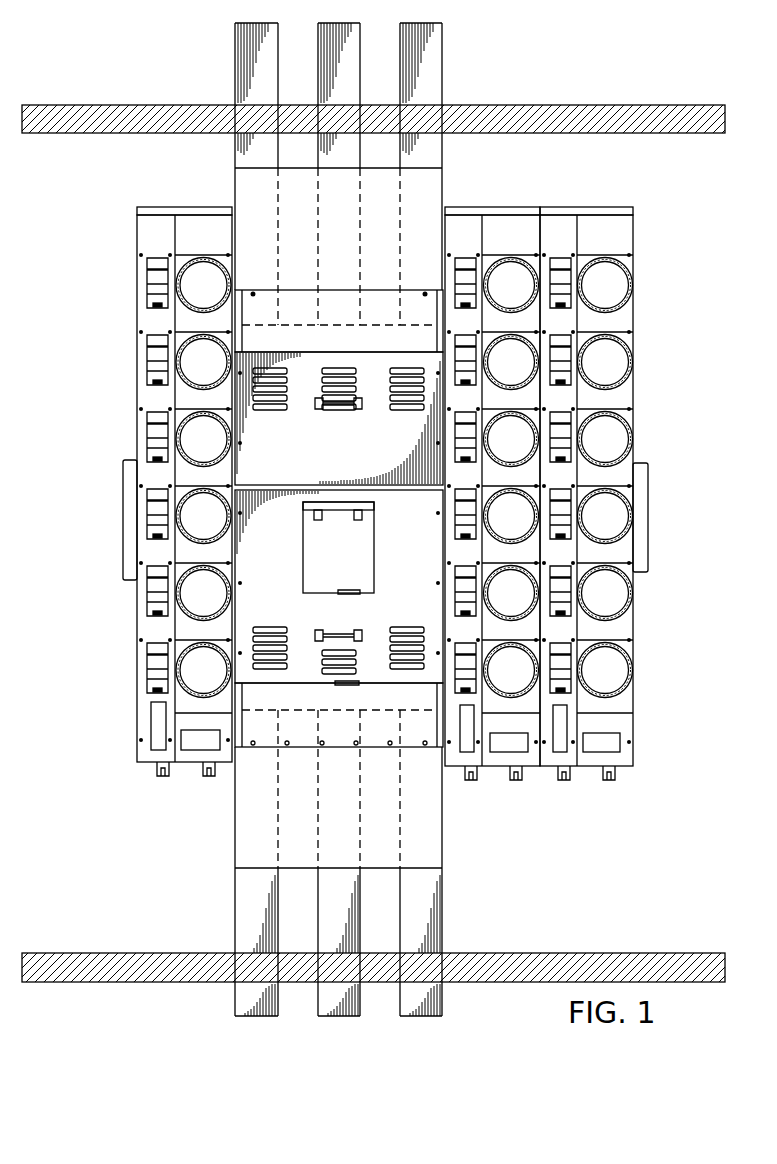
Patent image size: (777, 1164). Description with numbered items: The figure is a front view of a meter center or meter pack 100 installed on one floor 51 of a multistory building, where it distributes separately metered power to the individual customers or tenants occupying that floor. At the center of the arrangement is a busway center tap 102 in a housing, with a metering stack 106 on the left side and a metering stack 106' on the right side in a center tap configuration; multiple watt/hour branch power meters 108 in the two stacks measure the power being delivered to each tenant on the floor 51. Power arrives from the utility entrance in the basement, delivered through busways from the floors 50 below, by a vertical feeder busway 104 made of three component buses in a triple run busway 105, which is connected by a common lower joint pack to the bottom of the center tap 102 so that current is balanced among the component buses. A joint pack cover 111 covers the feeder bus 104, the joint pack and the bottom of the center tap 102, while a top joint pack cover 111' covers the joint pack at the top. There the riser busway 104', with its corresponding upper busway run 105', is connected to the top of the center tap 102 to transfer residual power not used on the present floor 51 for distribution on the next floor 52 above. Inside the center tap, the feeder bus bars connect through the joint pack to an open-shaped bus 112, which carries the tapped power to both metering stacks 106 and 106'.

The meter center 100 is at (380, 520).
The busway center tap 102 is at (252, 463).
The feeder busway 104 is at (335, 944).
The riser busway 104' is at (338, 93).
The triple run busway 105 is at (382, 791).
The upper duct plenum 105' is at (384, 246).
The metering stack 106 is at (129, 491).
The metering stack 106' is at (586, 493).
The branch power meter 108 is at (187, 592).
The joint pack cover 111 is at (311, 777).
The top joint pack cover 111' is at (310, 260).
The open-shaped bus 112 is at (258, 340).
The floors below 50 is at (89, 1006).
The floor 51 is at (373, 942).
The next floor above 52 is at (373, 79).